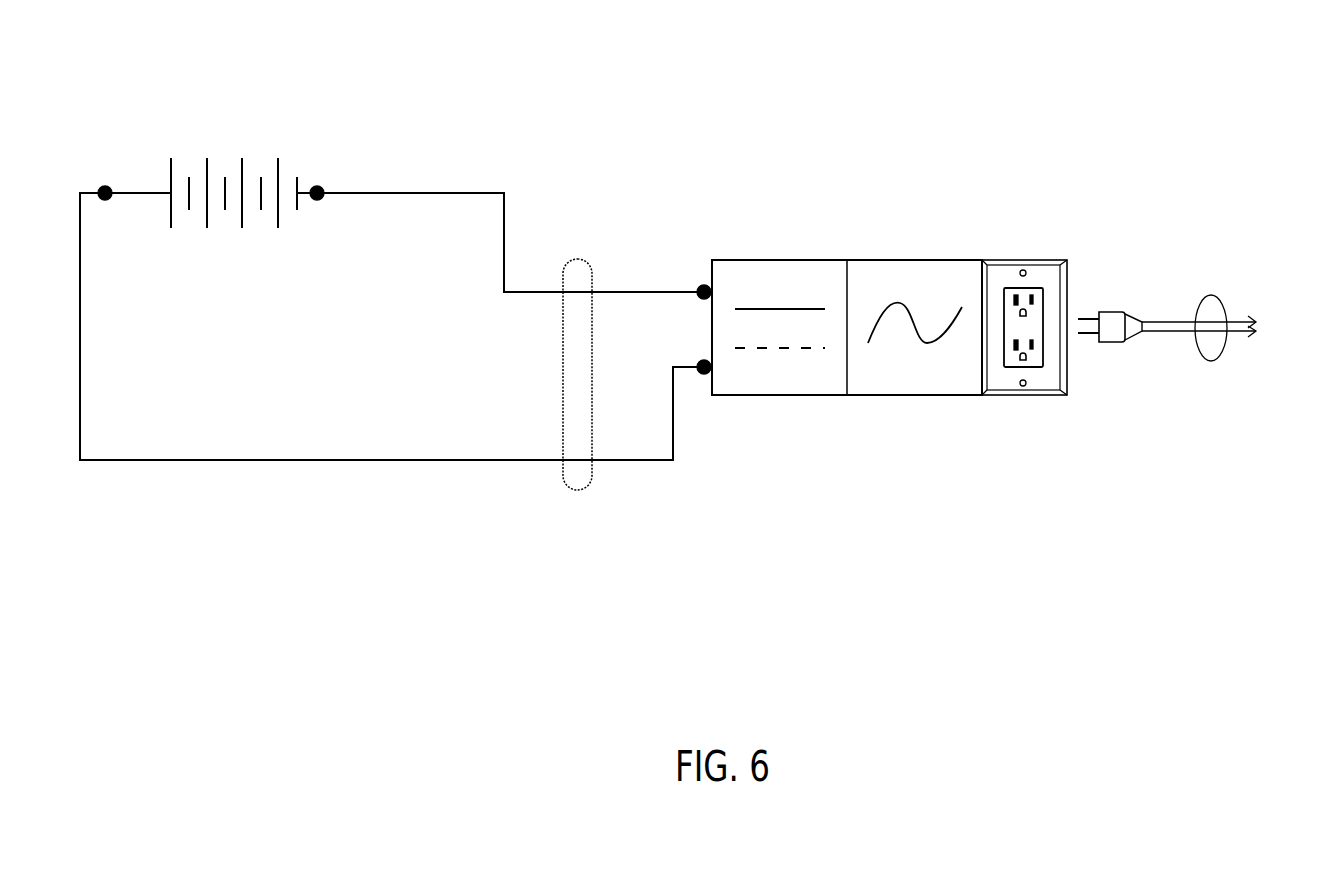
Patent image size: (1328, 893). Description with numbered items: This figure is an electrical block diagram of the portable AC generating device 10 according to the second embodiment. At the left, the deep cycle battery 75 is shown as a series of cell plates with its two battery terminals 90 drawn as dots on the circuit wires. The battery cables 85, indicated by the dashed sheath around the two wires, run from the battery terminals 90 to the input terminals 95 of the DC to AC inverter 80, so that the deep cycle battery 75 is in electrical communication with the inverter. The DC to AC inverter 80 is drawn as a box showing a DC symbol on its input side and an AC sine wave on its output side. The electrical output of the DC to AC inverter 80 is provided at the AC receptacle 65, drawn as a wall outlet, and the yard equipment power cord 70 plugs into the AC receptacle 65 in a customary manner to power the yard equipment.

The device 10 is at (413, 613).
The AC receptacle 65 is at (1040, 267).
The yard equipment power cord 70 is at (1215, 353).
The deep cycle battery 75 is at (252, 150).
The DC to AC inverter 80 is at (852, 258).
The battery cables 85 is at (580, 258).
The battery terminals 90 is at (108, 188).
The input terminals 95 is at (706, 286).